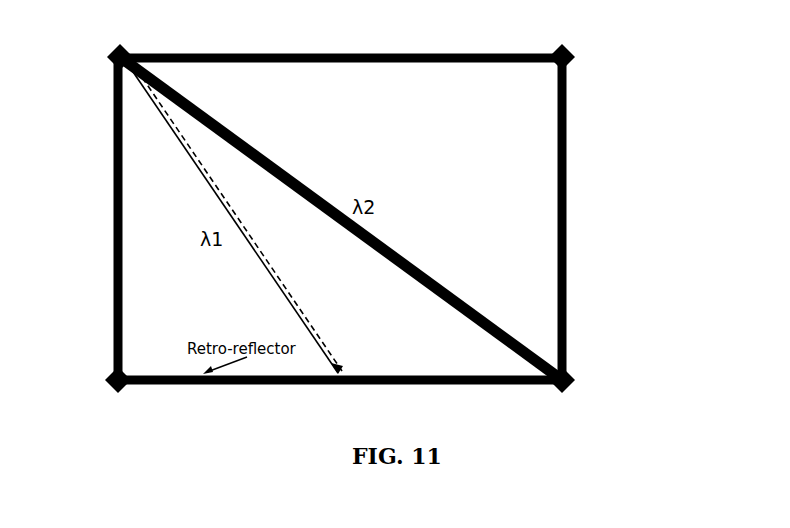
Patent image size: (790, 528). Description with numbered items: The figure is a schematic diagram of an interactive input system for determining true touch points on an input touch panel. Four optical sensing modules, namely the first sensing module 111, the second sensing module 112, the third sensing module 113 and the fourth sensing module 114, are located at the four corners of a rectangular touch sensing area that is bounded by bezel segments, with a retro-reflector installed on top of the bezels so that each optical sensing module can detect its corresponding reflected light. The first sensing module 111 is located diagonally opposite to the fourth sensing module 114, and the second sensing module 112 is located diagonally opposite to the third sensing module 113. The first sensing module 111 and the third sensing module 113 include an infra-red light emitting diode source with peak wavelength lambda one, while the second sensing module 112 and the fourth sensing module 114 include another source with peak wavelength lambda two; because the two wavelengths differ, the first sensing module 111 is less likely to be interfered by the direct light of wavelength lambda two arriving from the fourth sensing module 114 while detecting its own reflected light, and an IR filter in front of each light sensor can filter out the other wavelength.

The sensing module 1 111 is at (197, 45).
The sensing module 2 112 is at (546, 45).
The sensing module 3 113 is at (192, 394).
The sensing module 4 114 is at (573, 394).